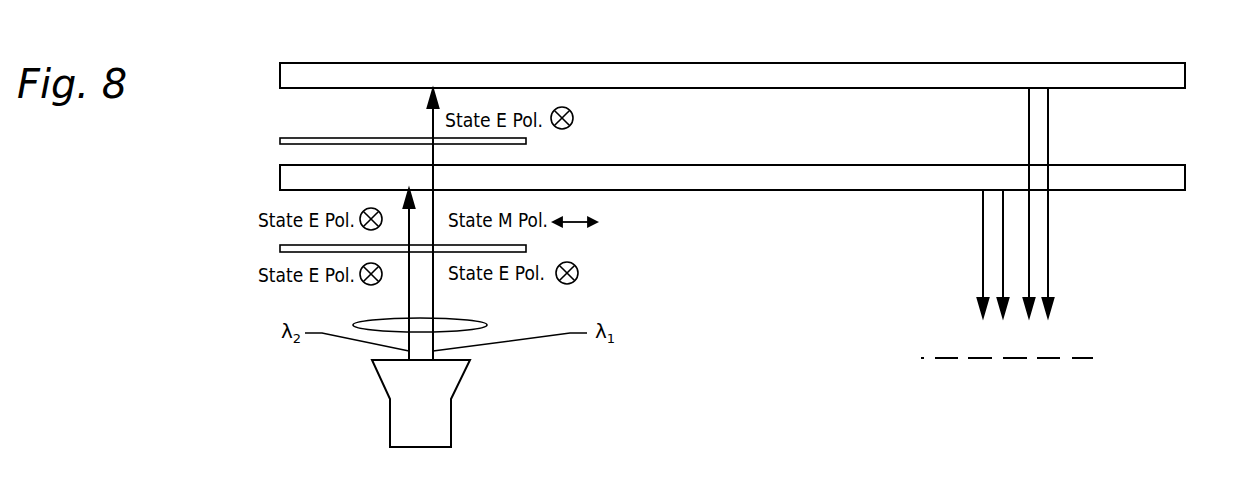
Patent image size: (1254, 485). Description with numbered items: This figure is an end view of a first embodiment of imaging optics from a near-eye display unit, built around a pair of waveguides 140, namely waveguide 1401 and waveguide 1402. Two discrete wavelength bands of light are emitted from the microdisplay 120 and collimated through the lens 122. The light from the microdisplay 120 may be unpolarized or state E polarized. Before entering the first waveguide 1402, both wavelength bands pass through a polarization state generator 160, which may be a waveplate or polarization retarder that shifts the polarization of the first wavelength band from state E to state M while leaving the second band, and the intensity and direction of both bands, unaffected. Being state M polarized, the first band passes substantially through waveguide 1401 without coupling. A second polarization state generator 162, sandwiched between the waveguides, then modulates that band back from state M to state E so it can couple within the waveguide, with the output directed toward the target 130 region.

The microdisplay 120 is at (451, 415).
The lens 122 is at (487, 324).
The target 130 is at (1077, 358).
The waveguides 140 is at (756, 142).
The waveguide 1401 is at (1163, 88).
The waveguide 1402 is at (1163, 190).
The polarization state generator 160 is at (280, 247).
The second polarization state generator 162 is at (280, 141).